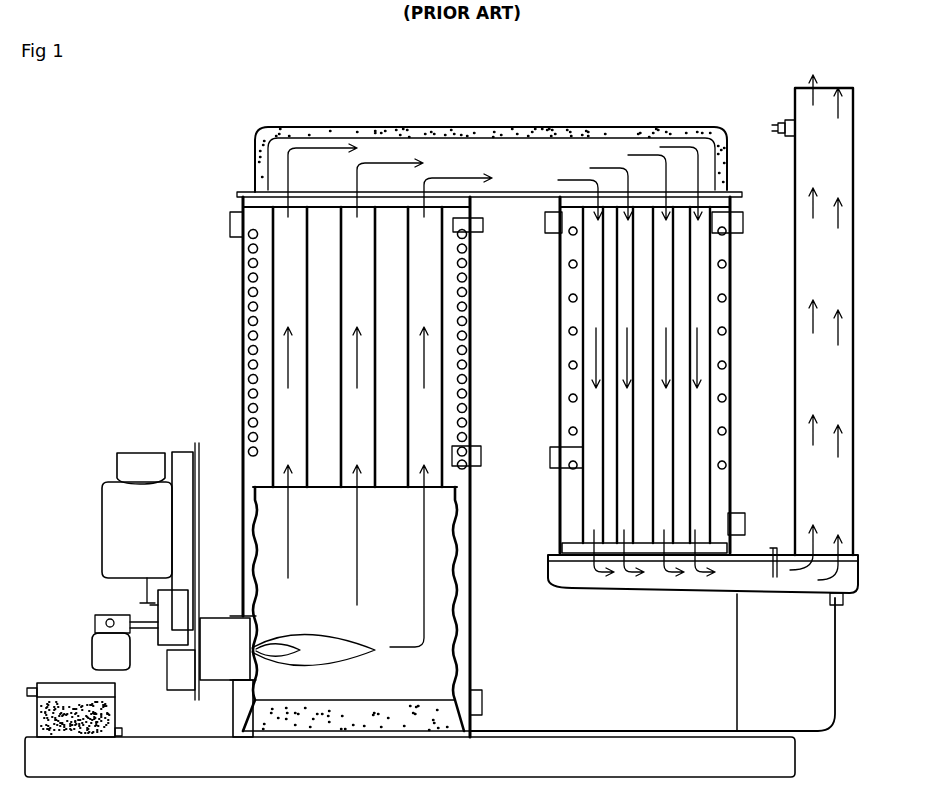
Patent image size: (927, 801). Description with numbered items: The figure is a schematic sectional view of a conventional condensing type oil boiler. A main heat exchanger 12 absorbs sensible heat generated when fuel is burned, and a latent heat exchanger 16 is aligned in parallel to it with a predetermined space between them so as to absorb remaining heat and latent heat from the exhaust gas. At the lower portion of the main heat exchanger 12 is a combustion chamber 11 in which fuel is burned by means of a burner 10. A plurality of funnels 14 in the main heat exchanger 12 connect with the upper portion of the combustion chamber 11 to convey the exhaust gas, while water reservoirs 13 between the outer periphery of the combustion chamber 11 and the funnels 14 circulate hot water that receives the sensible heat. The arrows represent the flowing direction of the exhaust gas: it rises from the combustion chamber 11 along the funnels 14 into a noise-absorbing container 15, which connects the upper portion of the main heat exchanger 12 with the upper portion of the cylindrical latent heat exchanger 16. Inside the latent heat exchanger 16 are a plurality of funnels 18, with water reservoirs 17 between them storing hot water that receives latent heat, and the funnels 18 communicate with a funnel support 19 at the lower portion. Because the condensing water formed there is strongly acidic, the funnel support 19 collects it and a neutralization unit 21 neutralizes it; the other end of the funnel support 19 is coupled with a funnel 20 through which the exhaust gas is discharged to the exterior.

The burner 10 is at (213, 642).
The combustion chamber 11 is at (437, 612).
The main heat exchanger 12 is at (178, 302).
The water reservoirs 13 is at (447, 292).
The funnels 14 is at (423, 432).
The noise-absorbing container 15 is at (345, 128).
The latent heat exchanger 16 is at (553, 391).
The water reservoirs 17 is at (713, 305).
The funnels 18 is at (697, 267).
The funnel support 19 is at (757, 592).
The funnel 20 is at (795, 100).
The neutralization unit 21 is at (78, 690).